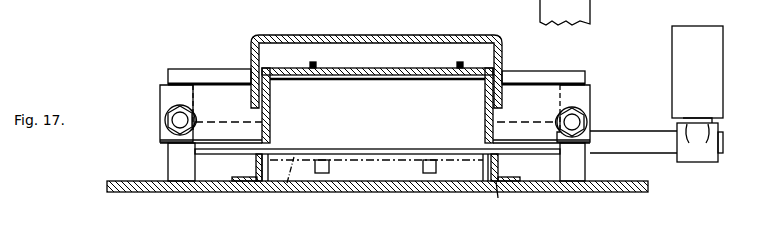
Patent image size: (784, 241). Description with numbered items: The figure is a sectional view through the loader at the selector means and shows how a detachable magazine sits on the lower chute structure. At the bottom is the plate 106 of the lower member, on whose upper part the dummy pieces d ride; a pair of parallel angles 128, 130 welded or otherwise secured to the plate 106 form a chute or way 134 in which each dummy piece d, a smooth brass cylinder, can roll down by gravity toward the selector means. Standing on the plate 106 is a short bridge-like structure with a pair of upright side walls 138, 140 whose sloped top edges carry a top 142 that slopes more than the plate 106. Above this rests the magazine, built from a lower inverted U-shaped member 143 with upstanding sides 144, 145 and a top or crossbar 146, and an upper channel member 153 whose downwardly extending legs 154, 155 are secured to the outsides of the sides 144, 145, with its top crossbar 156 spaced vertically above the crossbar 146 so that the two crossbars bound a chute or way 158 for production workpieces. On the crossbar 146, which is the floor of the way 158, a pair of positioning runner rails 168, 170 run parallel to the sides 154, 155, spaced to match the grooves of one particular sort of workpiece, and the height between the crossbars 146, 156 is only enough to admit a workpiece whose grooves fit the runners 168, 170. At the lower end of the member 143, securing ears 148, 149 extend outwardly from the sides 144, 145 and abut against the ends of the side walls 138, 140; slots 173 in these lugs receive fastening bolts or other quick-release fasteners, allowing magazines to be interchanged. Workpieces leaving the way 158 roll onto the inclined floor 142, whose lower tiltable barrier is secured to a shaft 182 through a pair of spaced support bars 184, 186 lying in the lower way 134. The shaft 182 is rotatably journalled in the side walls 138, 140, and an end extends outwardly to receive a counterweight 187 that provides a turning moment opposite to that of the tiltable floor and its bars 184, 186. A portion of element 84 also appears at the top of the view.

The plate 106 is at (150, 192).
The angle 128 is at (257, 168).
The angle 130 is at (498, 165).
The way 134 is at (503, 201).
The side wall 138 is at (176, 165).
The side wall 140 is at (582, 173).
The top 142 is at (190, 75).
The lower inverted U-shaped member 143 is at (377, 96).
The side 144 is at (270, 104).
The side 145 is at (486, 99).
The crossbar 146 is at (377, 62).
The securing ear 148 is at (590, 96).
The securing ear 149 is at (160, 96).
The upper channel member 153 is at (380, 57).
The leg 154 is at (252, 44).
The leg 155 is at (504, 62).
The top crossbar 156 is at (428, 35).
The way 158 is at (290, 54).
The positioning runner rail 168 is at (316, 64).
The positioning runner rail 170 is at (458, 64).
The slot 173 is at (164, 118).
The shaft 182 is at (396, 130).
The support bar 184 is at (330, 166).
The support bar 186 is at (437, 166).
The counterweight 187 is at (718, 62).
The member 84 is at (596, 0).
The dummy piece d is at (286, 194).